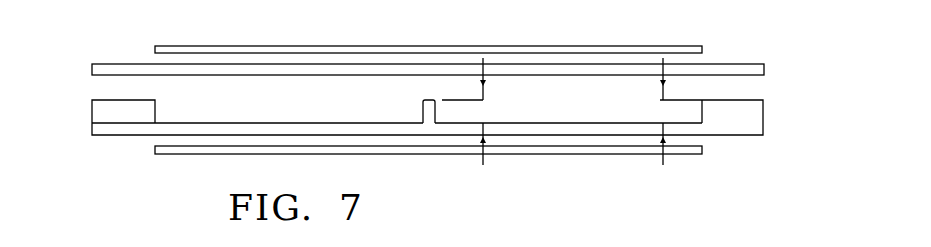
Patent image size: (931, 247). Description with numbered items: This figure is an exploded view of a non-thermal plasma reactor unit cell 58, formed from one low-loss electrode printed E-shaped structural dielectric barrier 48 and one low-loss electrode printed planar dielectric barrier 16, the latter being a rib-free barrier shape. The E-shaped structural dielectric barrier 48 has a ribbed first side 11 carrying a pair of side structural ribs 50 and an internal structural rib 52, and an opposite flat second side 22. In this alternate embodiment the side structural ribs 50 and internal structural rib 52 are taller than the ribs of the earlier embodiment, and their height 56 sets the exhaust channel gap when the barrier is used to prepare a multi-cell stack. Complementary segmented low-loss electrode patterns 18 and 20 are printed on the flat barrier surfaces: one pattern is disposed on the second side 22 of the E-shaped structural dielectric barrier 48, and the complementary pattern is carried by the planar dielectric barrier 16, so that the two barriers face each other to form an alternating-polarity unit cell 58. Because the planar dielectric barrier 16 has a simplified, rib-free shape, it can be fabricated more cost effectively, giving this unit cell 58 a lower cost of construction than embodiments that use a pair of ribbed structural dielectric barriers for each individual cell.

The first side 11 is at (272, 123).
The planar dielectric barrier 16 is at (712, 64).
The segmented low-loss electrode pattern 18 is at (647, 46).
The segmented low-loss electrode pattern 20 is at (683, 155).
The second side 22 is at (128, 64).
The E-shaped structural dielectric barrier 48 is at (747, 135).
The side structural ribs 50 is at (750, 100).
The internal structural rib 52 is at (425, 100).
The height 56 is at (483, 115).
The unit cell 58 is at (528, 180).